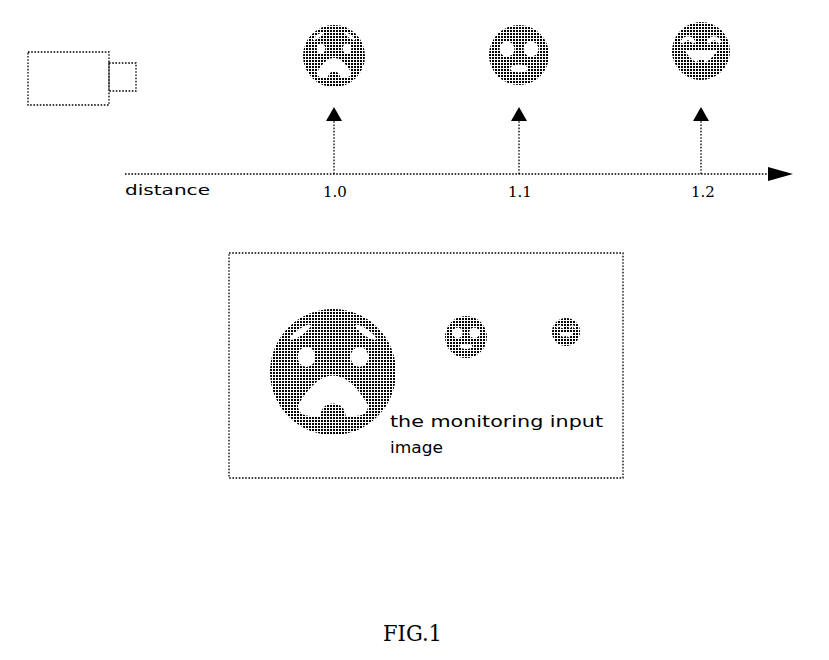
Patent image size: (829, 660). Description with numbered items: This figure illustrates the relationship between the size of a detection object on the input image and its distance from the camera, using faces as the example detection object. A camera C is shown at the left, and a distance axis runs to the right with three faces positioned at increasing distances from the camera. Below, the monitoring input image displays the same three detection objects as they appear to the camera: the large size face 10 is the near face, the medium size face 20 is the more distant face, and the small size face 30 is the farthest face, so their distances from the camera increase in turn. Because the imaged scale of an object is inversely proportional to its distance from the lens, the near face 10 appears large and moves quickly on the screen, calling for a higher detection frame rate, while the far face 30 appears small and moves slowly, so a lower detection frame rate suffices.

The camera C is at (89, 81).
The large size face 10 is at (330, 408).
The medium size face 20 is at (463, 362).
The small size face 30 is at (565, 343).